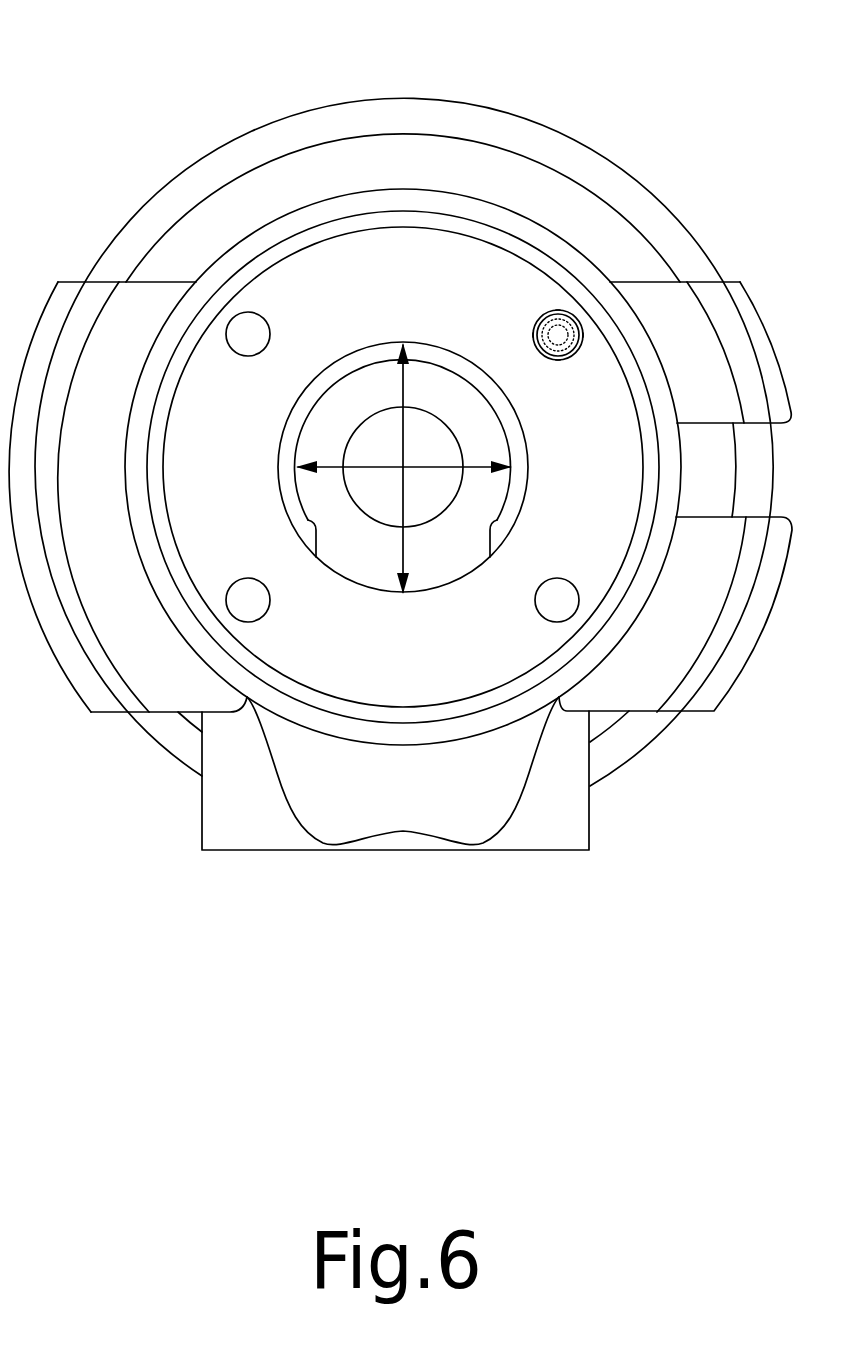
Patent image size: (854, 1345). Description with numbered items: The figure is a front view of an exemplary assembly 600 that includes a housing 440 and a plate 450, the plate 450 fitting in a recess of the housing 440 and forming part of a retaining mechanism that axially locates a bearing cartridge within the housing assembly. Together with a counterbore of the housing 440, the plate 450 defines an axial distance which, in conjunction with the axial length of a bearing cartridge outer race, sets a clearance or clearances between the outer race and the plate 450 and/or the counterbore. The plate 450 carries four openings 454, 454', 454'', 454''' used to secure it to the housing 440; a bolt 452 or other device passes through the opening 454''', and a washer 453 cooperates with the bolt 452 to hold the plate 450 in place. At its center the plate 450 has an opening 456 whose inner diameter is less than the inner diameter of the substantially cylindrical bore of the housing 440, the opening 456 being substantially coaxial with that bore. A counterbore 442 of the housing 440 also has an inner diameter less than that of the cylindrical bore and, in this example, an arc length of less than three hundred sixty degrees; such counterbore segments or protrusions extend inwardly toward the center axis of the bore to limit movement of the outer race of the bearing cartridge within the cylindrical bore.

The assembly 600 is at (250, 40).
The housing 440 is at (157, 190).
The counterbore 442 is at (516, 506).
The plate 450 is at (423, 278).
The bolt 452 is at (534, 334).
The washer 453 is at (549, 312).
The opening 454 is at (292, 324).
The opening 454' is at (298, 611).
The opening 454'' is at (502, 613).
The opening 454''' is at (580, 361).
The opening 456 is at (277, 470).